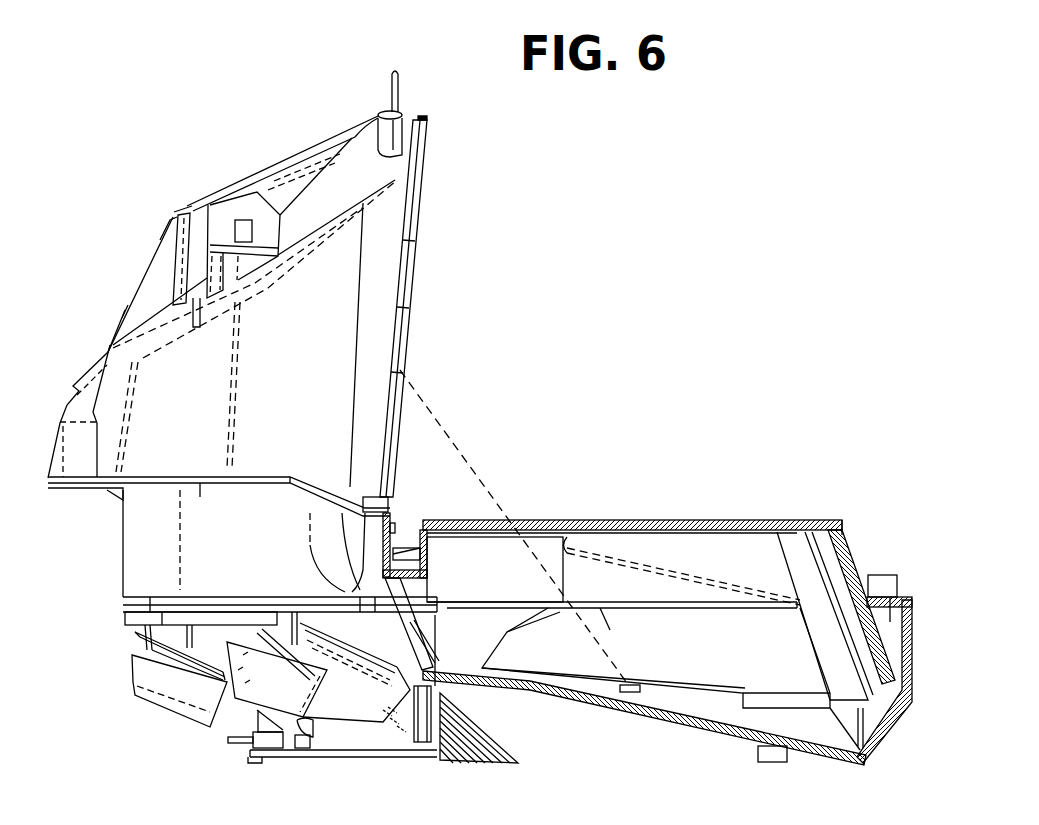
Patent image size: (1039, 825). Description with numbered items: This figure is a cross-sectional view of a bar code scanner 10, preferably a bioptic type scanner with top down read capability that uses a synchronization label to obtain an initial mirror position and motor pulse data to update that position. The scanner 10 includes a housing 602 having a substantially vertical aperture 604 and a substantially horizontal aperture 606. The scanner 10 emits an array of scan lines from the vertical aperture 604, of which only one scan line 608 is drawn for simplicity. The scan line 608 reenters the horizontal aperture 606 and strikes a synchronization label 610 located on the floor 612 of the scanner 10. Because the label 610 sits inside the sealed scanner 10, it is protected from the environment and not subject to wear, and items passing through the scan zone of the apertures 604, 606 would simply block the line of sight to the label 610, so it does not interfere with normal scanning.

The bar code scanner 10 is at (755, 170).
The housing 602 is at (203, 207).
The vertical aperture 604 is at (418, 212).
The horizontal aperture 606 is at (705, 520).
The scan line 608 is at (470, 452).
The synchronization label 610 is at (637, 688).
The floor 612 is at (695, 707).